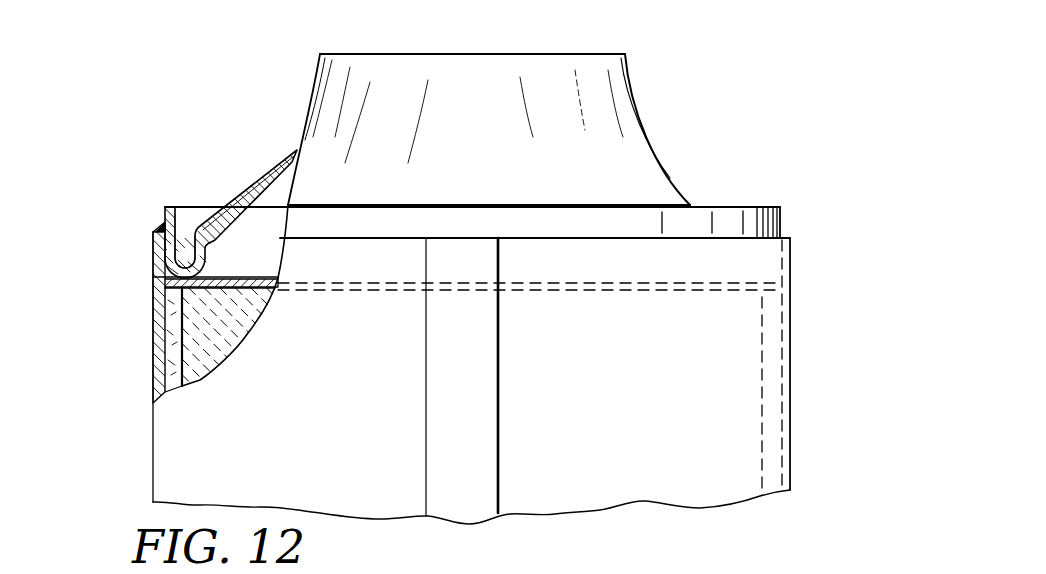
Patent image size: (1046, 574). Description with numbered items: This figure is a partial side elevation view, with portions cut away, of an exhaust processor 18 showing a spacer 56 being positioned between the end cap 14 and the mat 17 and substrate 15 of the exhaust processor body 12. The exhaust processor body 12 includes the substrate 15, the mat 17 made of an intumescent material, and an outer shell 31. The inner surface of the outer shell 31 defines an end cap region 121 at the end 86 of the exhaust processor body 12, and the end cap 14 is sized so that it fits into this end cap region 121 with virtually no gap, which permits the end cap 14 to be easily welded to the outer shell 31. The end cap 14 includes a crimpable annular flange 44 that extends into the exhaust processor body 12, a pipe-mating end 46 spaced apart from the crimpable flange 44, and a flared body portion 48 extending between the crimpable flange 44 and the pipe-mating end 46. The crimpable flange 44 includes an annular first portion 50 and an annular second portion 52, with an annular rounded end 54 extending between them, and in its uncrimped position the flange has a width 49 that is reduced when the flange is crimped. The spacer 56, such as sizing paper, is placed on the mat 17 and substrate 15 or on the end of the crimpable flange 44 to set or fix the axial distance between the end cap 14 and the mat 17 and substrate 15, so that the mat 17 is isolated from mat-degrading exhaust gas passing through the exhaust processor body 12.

The exhaust processor body 12 is at (845, 211).
The end cap 14 is at (674, 86).
The substrate 15 is at (218, 352).
The mat 17 is at (157, 380).
The exhaust processor 18 is at (802, 387).
The outer shell 31 is at (157, 340).
The crimpable annular flange 44 is at (809, 218).
The pipe-mating end 46 is at (325, 56).
The flared body portion 48 is at (286, 159).
The width 49 is at (135, 258).
The first portion 50 is at (166, 209).
The second portion 52 is at (213, 250).
The annular rounded end 54 is at (153, 277).
The spacer 56 is at (175, 290).
The end 86 is at (790, 267).
The end cap region 121 is at (247, 265).